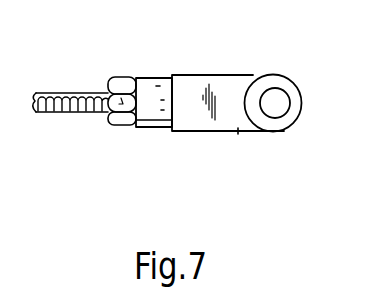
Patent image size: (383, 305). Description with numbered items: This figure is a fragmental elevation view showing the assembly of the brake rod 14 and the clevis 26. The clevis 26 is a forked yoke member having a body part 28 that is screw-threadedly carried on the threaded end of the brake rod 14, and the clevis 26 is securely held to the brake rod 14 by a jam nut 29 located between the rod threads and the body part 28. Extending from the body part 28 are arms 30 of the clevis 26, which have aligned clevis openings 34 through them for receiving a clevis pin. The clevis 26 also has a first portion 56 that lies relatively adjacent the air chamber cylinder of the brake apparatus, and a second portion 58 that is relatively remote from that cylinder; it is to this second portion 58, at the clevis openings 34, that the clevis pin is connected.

The brake rod 14 is at (81, 112).
The jam nut 29 is at (120, 124).
The body part 28 is at (152, 83).
The first portion 56 is at (140, 127).
The clevis 26 is at (228, 76).
The second portion 58 is at (273, 134).
The clevis openings 34 is at (289, 99).
The arms 30 is at (239, 131).